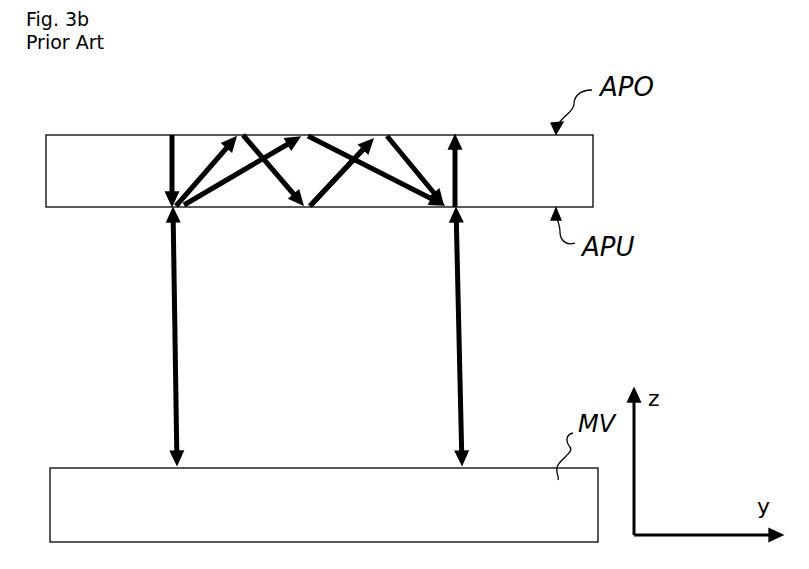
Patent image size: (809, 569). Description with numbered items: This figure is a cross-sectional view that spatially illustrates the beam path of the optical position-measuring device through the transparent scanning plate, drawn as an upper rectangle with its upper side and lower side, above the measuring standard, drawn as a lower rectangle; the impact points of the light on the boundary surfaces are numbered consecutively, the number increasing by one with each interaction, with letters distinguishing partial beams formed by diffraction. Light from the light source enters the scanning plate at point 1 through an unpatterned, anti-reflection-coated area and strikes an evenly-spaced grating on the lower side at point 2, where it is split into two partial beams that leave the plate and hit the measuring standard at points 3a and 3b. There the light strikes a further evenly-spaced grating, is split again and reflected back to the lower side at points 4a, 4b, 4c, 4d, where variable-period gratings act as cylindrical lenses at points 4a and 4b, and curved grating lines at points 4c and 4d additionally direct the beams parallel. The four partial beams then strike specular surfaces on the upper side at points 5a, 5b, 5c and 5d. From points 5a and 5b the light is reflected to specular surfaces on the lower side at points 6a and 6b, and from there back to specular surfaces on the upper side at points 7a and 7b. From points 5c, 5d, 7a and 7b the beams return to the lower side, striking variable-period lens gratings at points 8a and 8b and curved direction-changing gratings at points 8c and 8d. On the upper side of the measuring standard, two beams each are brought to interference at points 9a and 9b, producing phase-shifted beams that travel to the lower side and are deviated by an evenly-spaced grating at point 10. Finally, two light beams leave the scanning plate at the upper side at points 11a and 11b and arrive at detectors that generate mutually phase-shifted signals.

The light entry point 1 is at (169, 151).
The first grating impact point 2 is at (152, 336).
The measuring standard impact point 3a is at (152, 336).
The measuring standard impact point 3b is at (157, 336).
The lower-side lens grating impact point 4a is at (152, 336).
The lower-side lens grating impact point 4b is at (152, 336).
The lower-side curved grating impact point 4c is at (152, 336).
The lower-side curved grating impact point 4d is at (152, 336).
The upper-side specular impact point 5a is at (239, 137).
The upper-side specular impact point 5b is at (239, 156).
The upper-side specular impact point 5c is at (314, 137).
The upper-side specular impact point 5d is at (314, 155).
The lower-side specular impact point 6a is at (328, 210).
The lower-side specular impact point 6b is at (333, 207).
The upper-side specular impact point 7a is at (376, 137).
The upper-side specular impact point 7b is at (376, 156).
The lower-side lens grating impact point 8a is at (485, 336).
The lower-side lens grating impact point 8b is at (485, 336).
The lower-side curved grating impact point 8c is at (485, 336).
The lower-side curved grating impact point 8d is at (485, 336).
The interference point on measuring standard 9a is at (485, 336).
The interference point on measuring standard 9b is at (480, 336).
The deflection grating impact point 10 is at (485, 336).
The light exit point 11a is at (452, 137).
The light exit point 11b is at (452, 156).